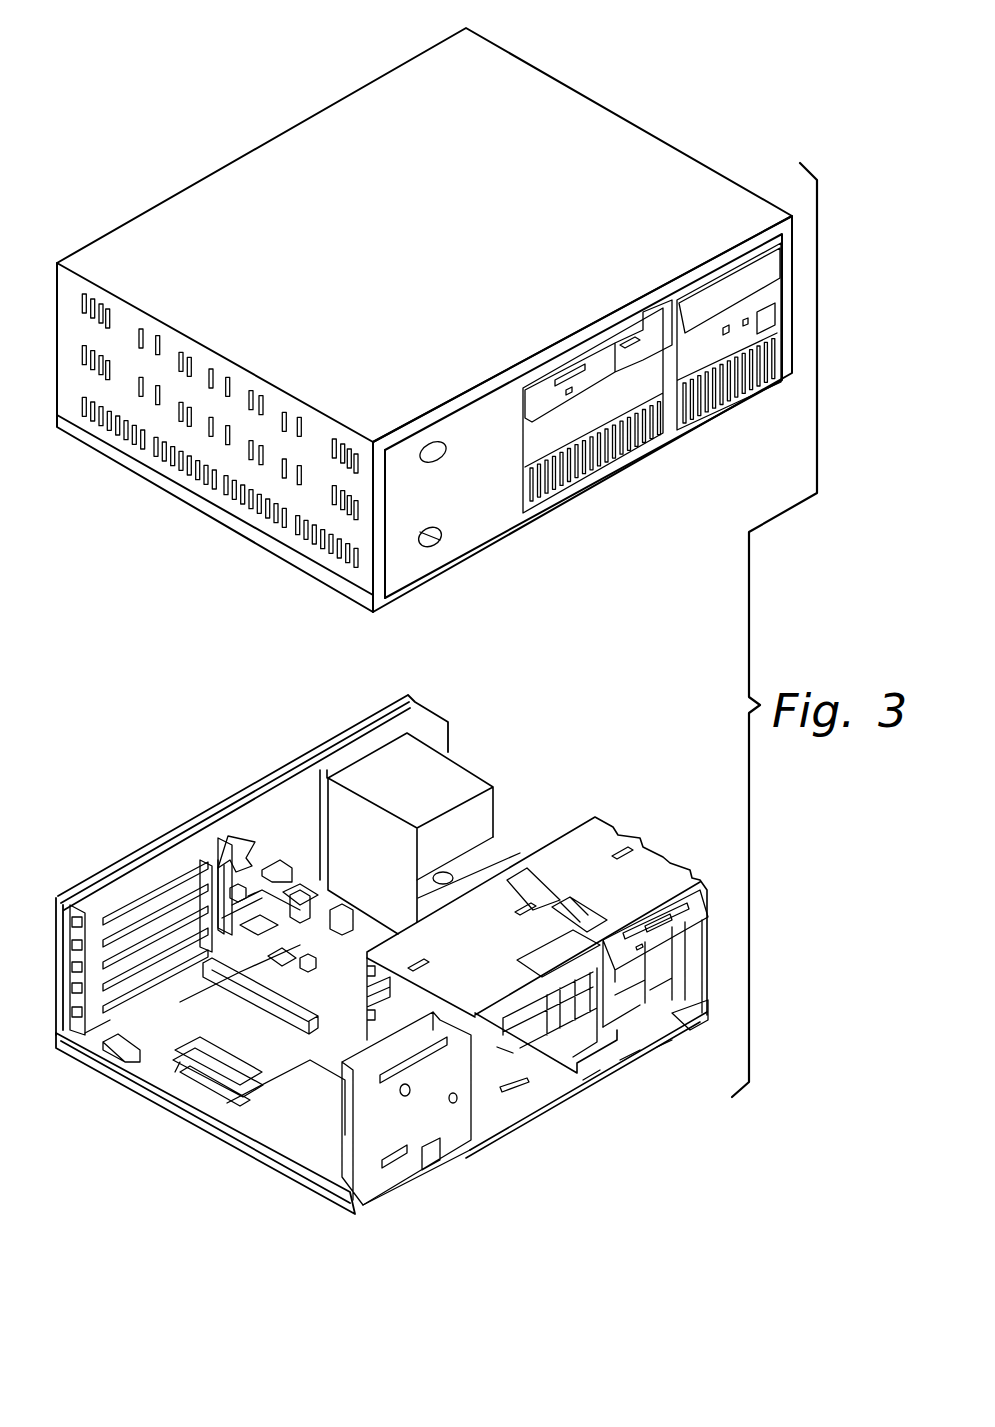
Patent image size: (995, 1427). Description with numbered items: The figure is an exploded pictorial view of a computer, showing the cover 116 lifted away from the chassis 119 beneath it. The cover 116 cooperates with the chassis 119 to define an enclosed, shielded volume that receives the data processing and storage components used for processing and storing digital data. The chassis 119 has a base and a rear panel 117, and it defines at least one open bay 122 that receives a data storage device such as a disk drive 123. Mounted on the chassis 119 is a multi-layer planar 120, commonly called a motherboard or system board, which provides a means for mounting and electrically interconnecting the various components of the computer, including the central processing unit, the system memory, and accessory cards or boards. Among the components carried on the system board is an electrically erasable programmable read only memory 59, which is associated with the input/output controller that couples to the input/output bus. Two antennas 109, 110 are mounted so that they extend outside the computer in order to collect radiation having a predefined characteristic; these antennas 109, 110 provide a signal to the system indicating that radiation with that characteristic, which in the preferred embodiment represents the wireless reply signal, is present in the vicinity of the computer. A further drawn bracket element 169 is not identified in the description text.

The cover 116 is at (243, 153).
The rear panel 117 is at (120, 862).
The antenna 109 is at (226, 838).
The antenna 110 is at (248, 850).
The Electrical Erasable Programmable Read Only Memory (EEPROM) 59 is at (300, 964).
The disk drive 123 is at (694, 899).
The open bay 122 is at (590, 973).
The multi-layer planar 120 is at (113, 1032).
The chassis 119 is at (163, 1107).
The front bracket plate 169 is at (340, 1130).